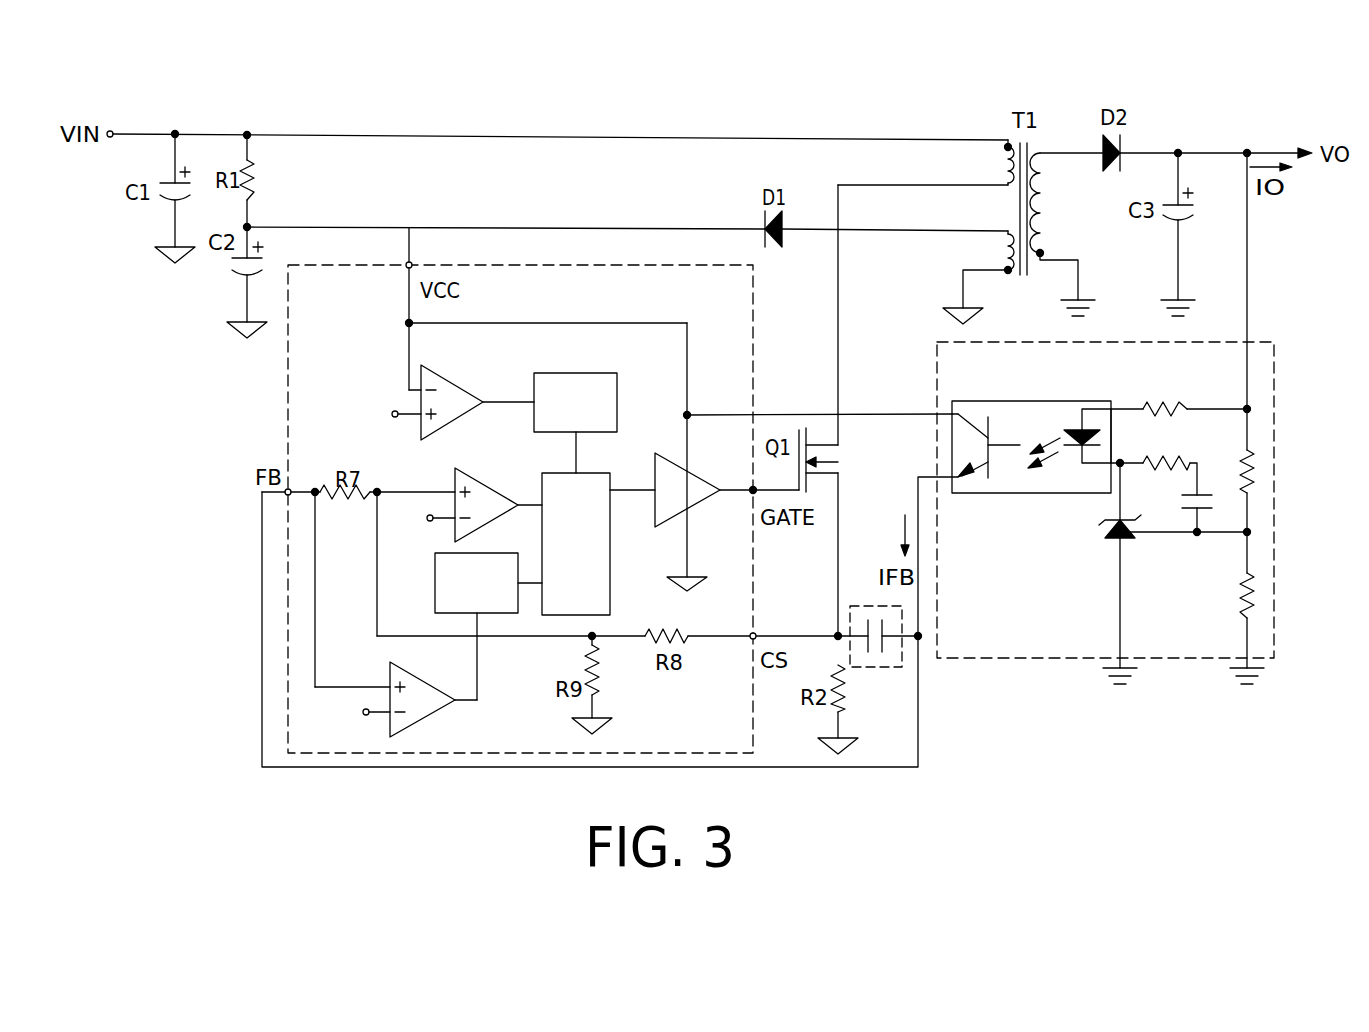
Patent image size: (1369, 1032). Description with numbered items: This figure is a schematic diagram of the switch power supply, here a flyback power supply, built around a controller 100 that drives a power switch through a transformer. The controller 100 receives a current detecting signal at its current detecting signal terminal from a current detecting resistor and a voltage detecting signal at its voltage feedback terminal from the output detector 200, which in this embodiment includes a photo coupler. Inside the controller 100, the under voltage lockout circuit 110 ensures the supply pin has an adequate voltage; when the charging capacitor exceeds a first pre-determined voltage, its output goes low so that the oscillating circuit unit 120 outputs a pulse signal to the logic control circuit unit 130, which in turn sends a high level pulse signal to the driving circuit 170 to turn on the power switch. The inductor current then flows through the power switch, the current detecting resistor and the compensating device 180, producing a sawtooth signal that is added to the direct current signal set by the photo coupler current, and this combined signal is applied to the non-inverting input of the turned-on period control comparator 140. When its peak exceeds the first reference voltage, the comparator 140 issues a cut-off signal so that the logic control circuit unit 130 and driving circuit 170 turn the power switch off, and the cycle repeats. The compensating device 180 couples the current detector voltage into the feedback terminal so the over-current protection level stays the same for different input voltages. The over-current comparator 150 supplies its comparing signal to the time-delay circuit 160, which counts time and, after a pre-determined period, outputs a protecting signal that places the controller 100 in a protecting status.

The controller 100 is at (295, 413).
The under voltage lockout circuit 110 is at (457, 379).
The oscillating circuit unit 120 is at (617, 386).
The logic control circuit unit 130 is at (610, 482).
The turned-on period control comparator 140 is at (487, 482).
The over-current comparator 150 is at (437, 706).
The time-delay circuit 160 is at (512, 612).
The driving circuit 170 is at (670, 522).
The compensating device 180 is at (882, 668).
The output detector 200 is at (1274, 362).